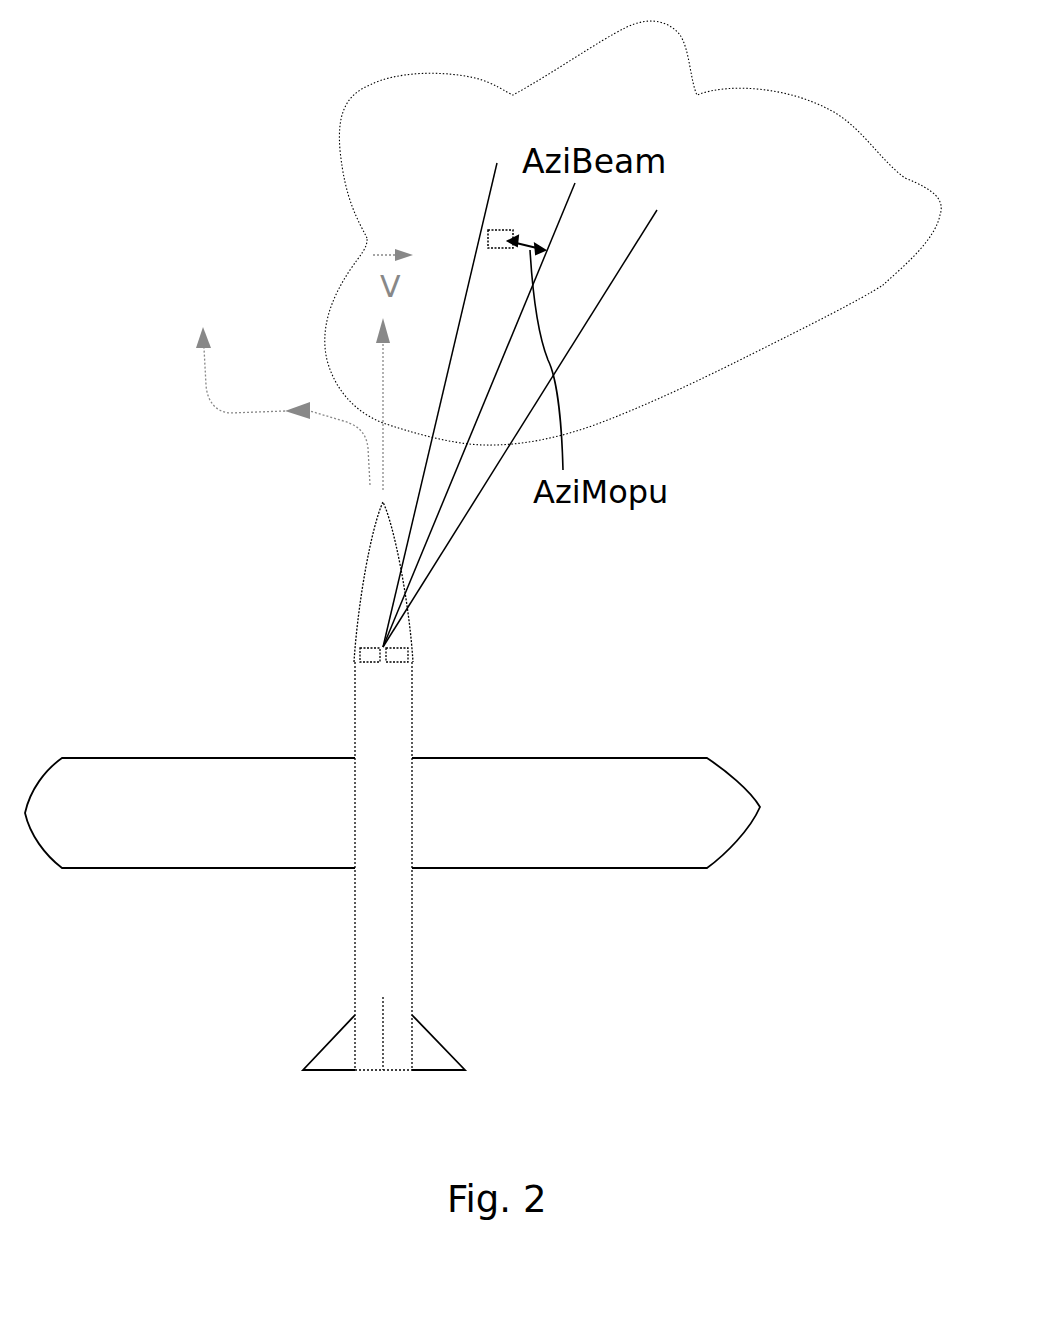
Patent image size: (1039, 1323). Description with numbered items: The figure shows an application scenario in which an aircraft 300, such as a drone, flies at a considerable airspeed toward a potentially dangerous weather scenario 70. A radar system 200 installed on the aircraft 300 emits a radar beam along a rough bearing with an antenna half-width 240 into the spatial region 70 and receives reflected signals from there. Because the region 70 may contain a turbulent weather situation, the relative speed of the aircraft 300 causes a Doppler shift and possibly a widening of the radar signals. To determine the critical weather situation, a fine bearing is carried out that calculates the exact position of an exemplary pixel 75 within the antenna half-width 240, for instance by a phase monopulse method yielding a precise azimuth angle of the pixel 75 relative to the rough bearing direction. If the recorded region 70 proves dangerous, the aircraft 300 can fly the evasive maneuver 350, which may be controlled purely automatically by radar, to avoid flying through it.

The weather scenario 70 is at (677, 388).
The pixel 75 is at (497, 237).
The radar system 200 is at (392, 786).
The antenna half-width 240 is at (408, 543).
The aircraft 300 is at (412, 889).
The evasive maneuver 350 is at (207, 385).